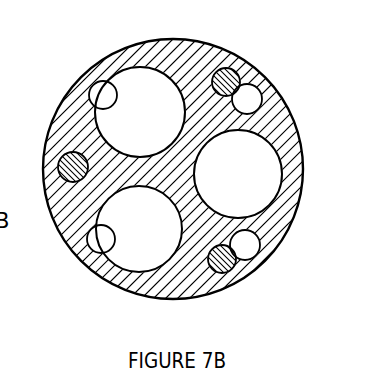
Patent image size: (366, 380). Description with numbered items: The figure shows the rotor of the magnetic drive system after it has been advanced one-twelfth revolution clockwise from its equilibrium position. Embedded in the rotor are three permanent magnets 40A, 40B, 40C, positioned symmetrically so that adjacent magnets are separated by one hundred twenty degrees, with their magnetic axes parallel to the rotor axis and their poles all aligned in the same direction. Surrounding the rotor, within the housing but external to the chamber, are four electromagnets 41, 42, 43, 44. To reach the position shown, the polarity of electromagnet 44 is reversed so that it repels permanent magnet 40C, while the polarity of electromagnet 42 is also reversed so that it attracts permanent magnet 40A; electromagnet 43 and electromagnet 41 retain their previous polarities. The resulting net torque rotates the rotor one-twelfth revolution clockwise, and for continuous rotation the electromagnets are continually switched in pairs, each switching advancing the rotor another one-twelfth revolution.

The permanent magnet 40A is at (237, 70).
The permanent magnet 40B is at (235, 270).
The permanent magnet 40C is at (59, 166).
The electromagnet 41 is at (91, 82).
The electromagnet 42 is at (262, 97).
The electromagnet 43 is at (261, 242).
The electromagnet 44 is at (100, 253).